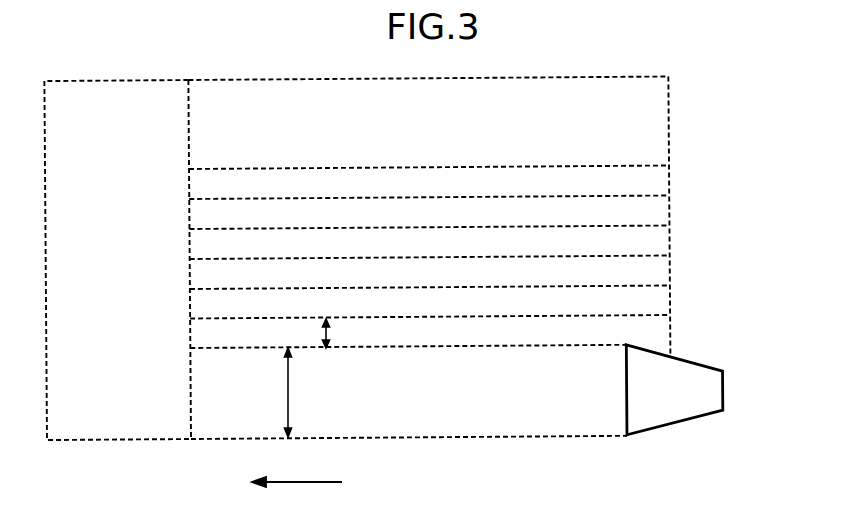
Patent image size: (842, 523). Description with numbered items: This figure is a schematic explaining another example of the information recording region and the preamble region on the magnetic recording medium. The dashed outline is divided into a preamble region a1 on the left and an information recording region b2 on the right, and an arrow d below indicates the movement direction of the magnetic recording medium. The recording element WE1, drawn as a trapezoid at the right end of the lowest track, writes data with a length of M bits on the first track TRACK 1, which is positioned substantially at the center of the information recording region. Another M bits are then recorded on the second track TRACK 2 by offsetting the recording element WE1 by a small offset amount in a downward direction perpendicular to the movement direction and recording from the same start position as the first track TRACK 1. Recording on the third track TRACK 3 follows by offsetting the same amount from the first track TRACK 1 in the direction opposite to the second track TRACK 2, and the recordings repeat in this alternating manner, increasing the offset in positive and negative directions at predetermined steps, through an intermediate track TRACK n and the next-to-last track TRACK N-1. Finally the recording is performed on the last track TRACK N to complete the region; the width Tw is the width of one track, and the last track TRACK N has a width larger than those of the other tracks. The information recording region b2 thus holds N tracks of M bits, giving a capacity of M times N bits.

The preamble region a1 is at (116, 424).
The information recording region b2 is at (457, 438).
The arrow indicating movement direction d is at (304, 481).
The recording element WE1 is at (697, 415).
The track width Tw is at (302, 392).
The Nth track TRACK N is at (554, 419).
The (N-1)th track TRACK N-1 is at (662, 131).
The nth track TRACK n is at (662, 178).
The first track TRACK 1 is at (662, 241).
The second track TRACK 2 is at (662, 270).
The third track TRACK 3 is at (662, 211).